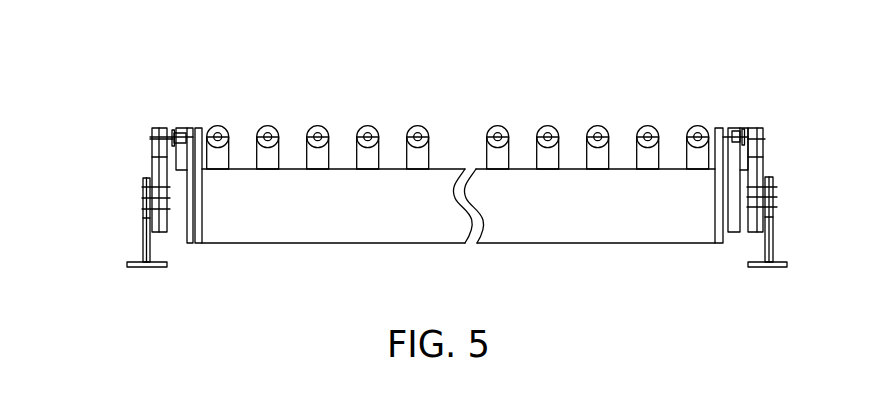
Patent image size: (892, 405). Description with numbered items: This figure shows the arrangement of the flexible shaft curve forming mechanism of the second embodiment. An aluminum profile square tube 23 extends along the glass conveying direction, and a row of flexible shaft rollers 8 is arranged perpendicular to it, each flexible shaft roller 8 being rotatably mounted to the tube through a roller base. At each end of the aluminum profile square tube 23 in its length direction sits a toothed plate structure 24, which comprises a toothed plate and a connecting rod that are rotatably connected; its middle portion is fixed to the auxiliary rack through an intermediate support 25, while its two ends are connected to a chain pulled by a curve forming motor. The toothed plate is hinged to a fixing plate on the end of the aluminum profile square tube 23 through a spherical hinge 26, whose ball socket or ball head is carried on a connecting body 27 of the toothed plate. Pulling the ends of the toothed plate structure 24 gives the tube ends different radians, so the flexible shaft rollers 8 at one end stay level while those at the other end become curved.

The flexible shaft roller 8 is at (372, 130).
The aluminum profile square tube 23 is at (520, 208).
The toothed plate structure 24 is at (160, 128).
The intermediate support 25 is at (143, 200).
The spherical hinge 26 is at (181, 131).
The connecting body 27 is at (175, 192).